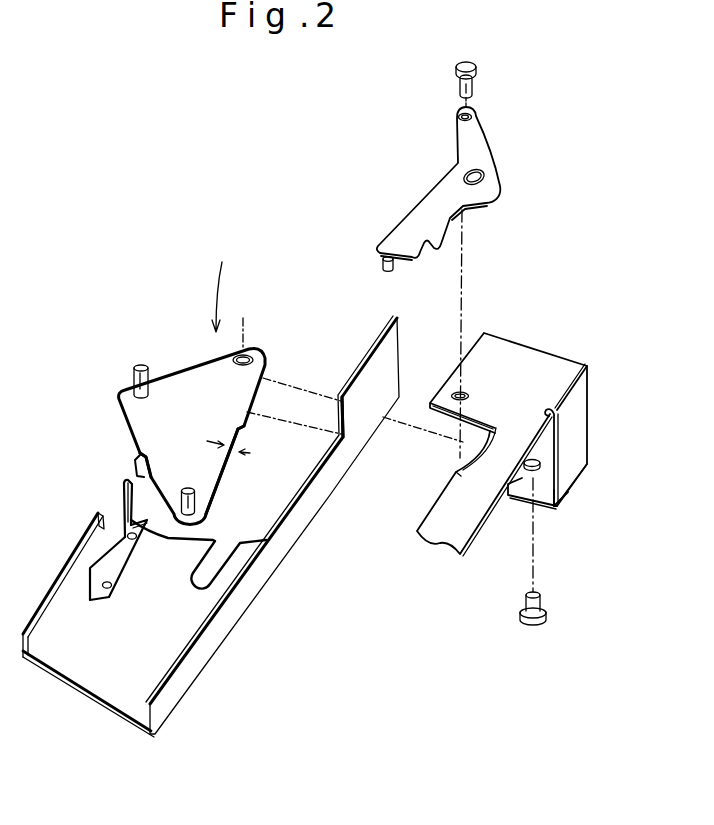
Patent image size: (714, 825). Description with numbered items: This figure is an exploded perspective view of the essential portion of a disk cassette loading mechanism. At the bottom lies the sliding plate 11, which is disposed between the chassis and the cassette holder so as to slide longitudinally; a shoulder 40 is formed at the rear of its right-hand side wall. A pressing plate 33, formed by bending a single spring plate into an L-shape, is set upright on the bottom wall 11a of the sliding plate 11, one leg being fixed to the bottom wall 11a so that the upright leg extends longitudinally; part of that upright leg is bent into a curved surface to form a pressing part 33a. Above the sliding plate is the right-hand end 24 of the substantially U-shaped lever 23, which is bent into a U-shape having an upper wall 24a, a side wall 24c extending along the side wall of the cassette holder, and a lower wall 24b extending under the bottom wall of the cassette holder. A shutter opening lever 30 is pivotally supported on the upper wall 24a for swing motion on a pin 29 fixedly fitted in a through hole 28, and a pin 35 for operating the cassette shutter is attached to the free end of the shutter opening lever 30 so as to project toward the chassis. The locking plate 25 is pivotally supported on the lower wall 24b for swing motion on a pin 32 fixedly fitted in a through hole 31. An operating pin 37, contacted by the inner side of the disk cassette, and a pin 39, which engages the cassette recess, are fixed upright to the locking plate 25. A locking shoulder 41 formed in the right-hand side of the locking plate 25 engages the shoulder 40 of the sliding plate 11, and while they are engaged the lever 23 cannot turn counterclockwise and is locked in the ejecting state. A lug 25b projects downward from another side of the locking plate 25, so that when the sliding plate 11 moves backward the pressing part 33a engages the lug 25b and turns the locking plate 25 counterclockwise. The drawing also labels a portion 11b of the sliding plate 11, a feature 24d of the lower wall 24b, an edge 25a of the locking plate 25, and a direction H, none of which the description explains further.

The sliding plate 11 is at (230, 514).
The bottom wall of the sliding plate 11a is at (92, 672).
The far side wall (flange) of base plate 11b is at (388, 352).
The lever 23 is at (440, 515).
The right-hand end of the lever 24 is at (525, 426).
The upper wall 24a is at (498, 365).
The lower wall 24b is at (574, 503).
The side wall 24c is at (593, 442).
The hole in bottom plate 24d is at (548, 458).
The locking plate 25 is at (264, 421).
The edge of triangular plate 25a is at (227, 483).
The lug 25b is at (137, 458).
The through hole 28 is at (451, 397).
The pin 29 is at (457, 83).
The shutter opening lever 30 is at (423, 196).
The through hole 31 is at (560, 500).
The pin 32 is at (526, 597).
The pressing plate 33 is at (92, 535).
The pressing part 33a is at (122, 485).
The pin 35 is at (383, 268).
The operating pin 37 is at (134, 365).
The pin 39 is at (196, 504).
The shoulder 40 is at (340, 402).
The locking shoulder 41 is at (249, 426).
The direction arrow H is at (214, 287).